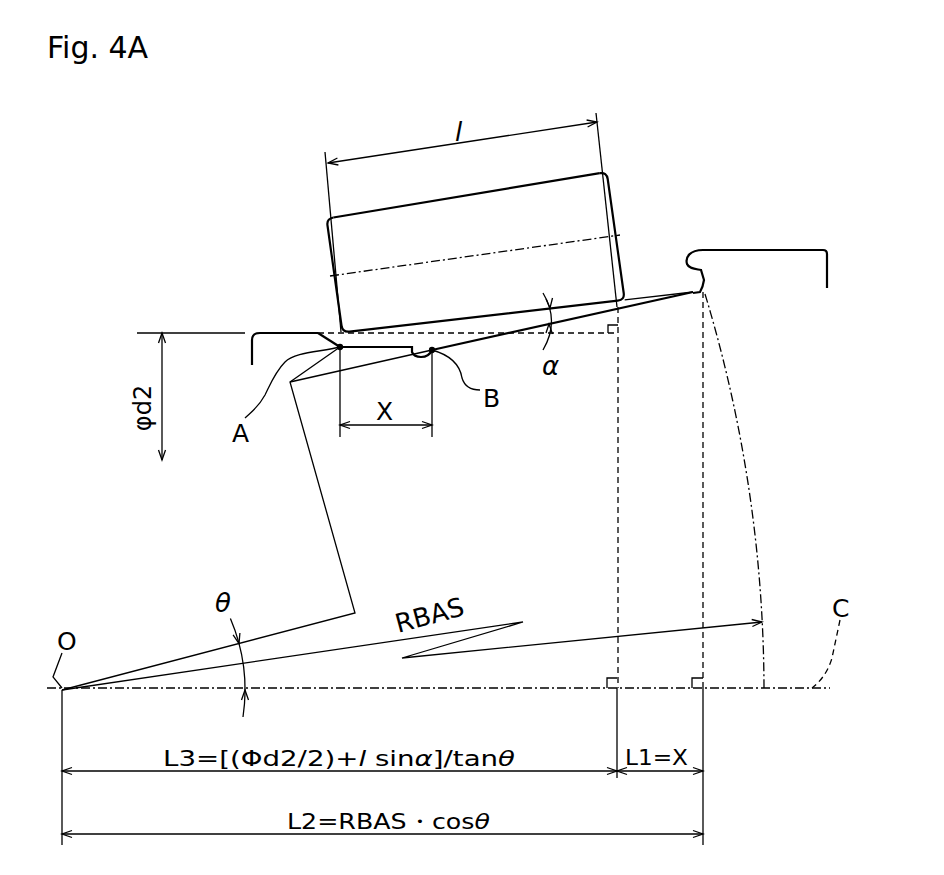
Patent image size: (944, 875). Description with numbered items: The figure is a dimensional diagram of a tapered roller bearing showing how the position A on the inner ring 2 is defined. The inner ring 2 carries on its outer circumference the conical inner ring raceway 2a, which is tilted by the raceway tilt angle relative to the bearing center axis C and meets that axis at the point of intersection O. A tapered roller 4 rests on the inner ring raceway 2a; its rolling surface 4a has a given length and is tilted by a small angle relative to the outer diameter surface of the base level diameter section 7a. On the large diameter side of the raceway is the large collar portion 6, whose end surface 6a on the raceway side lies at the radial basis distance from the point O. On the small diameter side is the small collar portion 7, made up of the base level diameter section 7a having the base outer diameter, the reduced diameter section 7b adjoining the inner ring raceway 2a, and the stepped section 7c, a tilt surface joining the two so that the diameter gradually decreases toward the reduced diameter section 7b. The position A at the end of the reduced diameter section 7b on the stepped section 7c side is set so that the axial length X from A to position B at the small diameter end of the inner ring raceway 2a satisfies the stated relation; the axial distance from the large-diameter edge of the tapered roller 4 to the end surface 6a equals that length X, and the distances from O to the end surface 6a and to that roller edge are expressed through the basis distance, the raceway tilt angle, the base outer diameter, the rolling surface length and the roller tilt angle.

The inner ring 2 is at (576, 249).
The inner ring raceway 2a is at (649, 297).
The tapered roller 4 is at (510, 234).
The rolling surface 4a is at (463, 195).
The large collar portion 6 is at (756, 205).
The end surface 6a is at (685, 263).
The small collar portion 7 is at (284, 277).
The base level diameter section 7a is at (280, 333).
The reduced diameter section 7b is at (372, 350).
The stepped section 7c is at (328, 334).